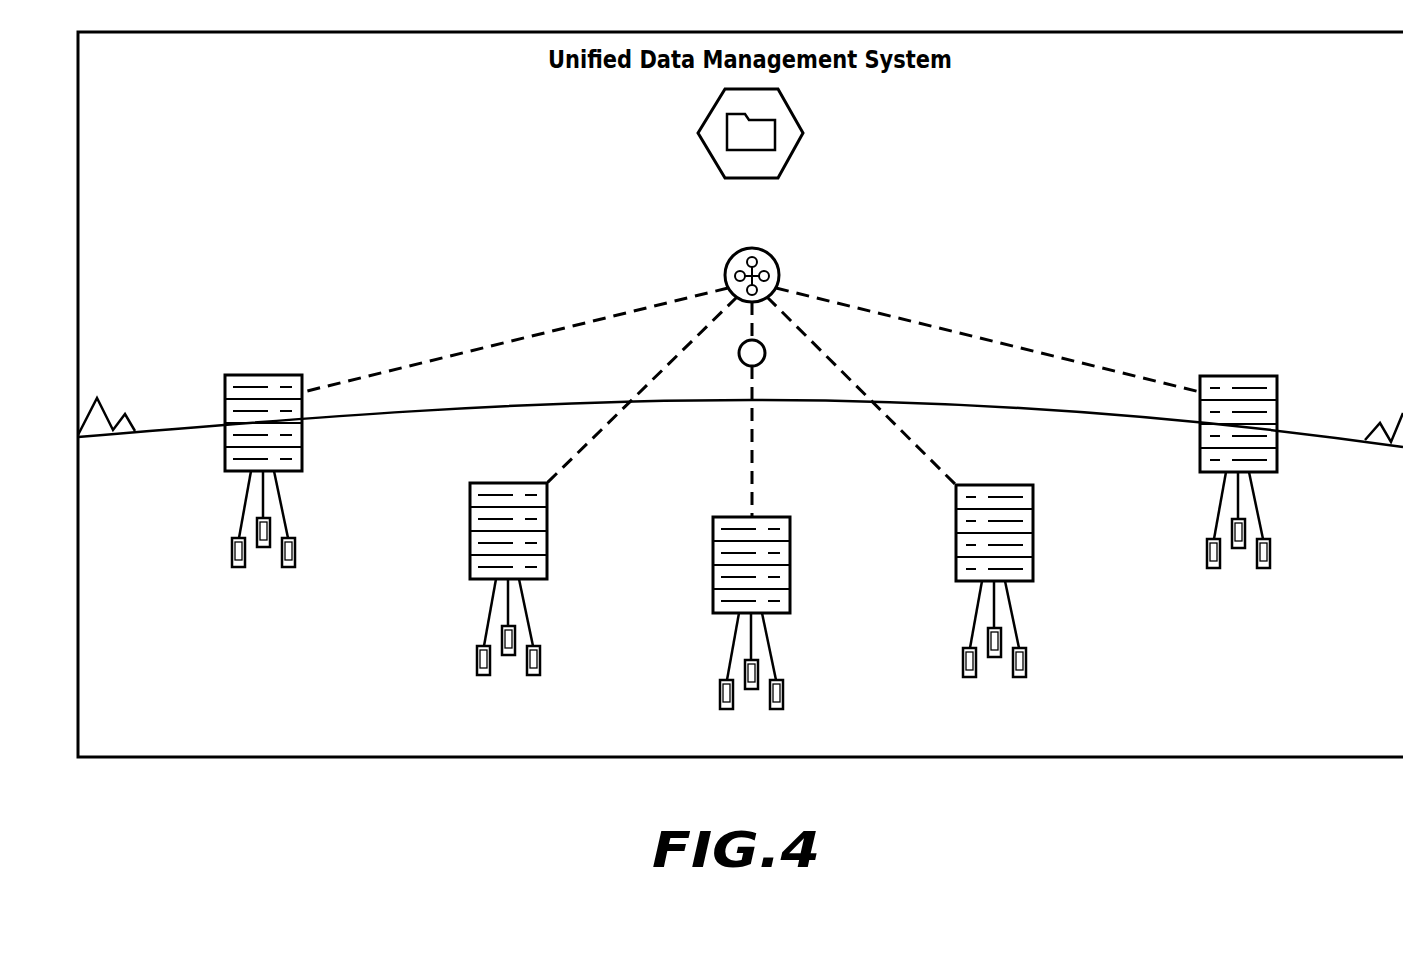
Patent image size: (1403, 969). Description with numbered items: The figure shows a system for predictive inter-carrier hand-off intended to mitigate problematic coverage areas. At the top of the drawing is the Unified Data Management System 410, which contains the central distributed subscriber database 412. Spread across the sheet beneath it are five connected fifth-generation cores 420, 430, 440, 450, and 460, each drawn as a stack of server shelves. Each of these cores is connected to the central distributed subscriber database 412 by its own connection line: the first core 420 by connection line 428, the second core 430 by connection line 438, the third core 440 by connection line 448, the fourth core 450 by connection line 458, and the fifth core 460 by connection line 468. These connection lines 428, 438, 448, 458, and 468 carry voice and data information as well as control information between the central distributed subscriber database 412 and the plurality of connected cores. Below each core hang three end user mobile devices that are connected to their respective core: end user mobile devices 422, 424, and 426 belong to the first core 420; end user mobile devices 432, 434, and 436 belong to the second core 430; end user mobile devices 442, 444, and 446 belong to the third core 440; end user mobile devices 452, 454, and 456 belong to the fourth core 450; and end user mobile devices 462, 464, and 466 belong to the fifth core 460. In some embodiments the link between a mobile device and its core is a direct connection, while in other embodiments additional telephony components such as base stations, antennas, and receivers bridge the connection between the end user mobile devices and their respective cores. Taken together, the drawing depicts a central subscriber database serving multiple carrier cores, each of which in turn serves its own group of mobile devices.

The Unified Data Management System 410 is at (787, 104).
The central distributed subscriber database 412 is at (770, 140).
The 5G Core 420 is at (225, 392).
The end user mobile device 422 is at (232, 548).
The end user mobile device 424 is at (263, 547).
The end user mobile device 426 is at (295, 556).
The connection line 428 is at (637, 306).
The 5G Core 430 is at (477, 516).
The end user mobile device 432 is at (450, 637).
The end user mobile device 434 is at (534, 645).
The end user mobile device 436 is at (570, 627).
The connection line 438 is at (668, 366).
The 5G Core 440 is at (720, 550).
The end user mobile device 442 is at (693, 671).
The end user mobile device 444 is at (777, 679).
The end user mobile device 446 is at (813, 661).
The connection line 448 is at (755, 392).
The 5G Core 450 is at (1027, 518).
The end user mobile device 452 is at (936, 639).
The end user mobile device 454 is at (1020, 647).
The end user mobile device 456 is at (1056, 629).
The connection line 458 is at (835, 365).
The 5G Core 460 is at (1271, 409).
The end user mobile device 462 is at (1180, 530).
The end user mobile device 464 is at (1264, 538).
The end user mobile device 466 is at (1300, 520).
The connection line 468 is at (868, 307).